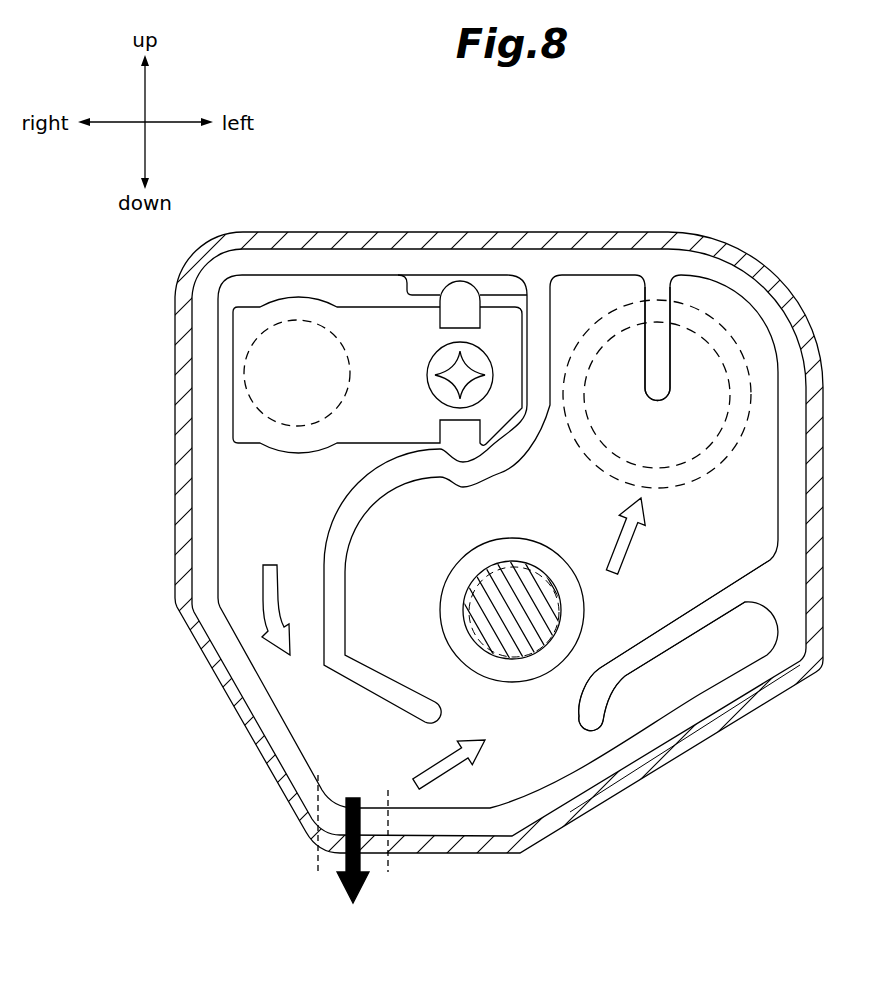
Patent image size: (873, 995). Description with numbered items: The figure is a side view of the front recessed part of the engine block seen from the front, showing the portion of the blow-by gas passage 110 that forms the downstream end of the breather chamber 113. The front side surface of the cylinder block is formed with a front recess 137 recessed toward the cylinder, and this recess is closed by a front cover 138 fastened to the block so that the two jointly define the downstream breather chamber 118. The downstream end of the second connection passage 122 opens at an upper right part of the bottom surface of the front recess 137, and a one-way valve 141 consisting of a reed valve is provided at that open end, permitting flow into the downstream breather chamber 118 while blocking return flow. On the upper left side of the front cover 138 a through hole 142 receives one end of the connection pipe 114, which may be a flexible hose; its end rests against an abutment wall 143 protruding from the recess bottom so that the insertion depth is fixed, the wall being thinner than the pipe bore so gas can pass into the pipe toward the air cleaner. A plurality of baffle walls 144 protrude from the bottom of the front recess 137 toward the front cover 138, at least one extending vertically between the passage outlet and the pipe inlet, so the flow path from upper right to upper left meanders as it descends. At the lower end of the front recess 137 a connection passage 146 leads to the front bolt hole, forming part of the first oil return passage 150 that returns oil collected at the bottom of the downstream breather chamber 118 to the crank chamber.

The blow-by gas passage 110 is at (497, 766).
The breather chamber 113 is at (538, 756).
The connection pipe 114 is at (680, 452).
The downstream breather chamber 118 is at (375, 651).
The second connection passage 122 is at (287, 336).
The front recess 137 is at (218, 545).
The front cover 138 is at (232, 697).
The one-way valve 141 is at (372, 317).
The through hole 142 is at (583, 348).
The abutment wall 143 is at (640, 390).
The baffle walls 144 is at (360, 510).
The connection passage 146 is at (318, 862).
The first oil return passage 150 is at (388, 866).